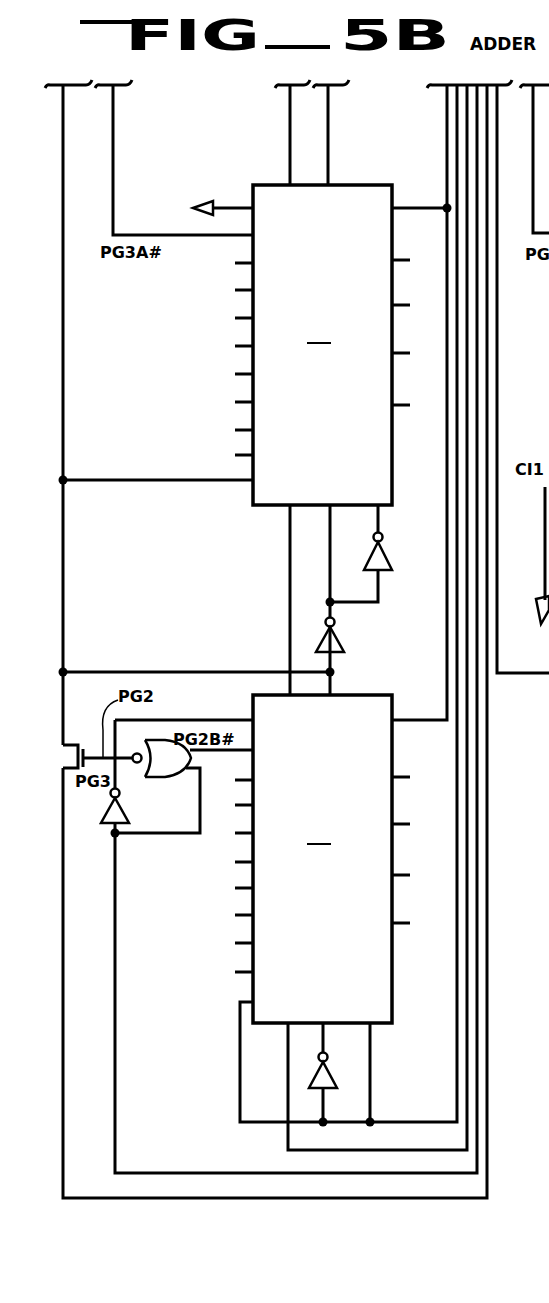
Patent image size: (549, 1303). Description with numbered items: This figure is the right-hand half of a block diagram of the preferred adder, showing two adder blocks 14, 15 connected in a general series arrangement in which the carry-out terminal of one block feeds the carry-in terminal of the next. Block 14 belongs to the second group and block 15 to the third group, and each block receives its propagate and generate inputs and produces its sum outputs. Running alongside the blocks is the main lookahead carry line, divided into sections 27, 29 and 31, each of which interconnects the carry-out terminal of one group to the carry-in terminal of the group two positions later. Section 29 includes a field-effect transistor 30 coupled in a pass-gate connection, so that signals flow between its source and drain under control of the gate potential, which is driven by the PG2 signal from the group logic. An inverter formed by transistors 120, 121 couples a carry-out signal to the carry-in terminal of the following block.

The block 14 is at (292, 920).
The block 15 is at (319, 390).
The section of main lookahead carry line 27 is at (497, 176).
The section of main lookahead carry line 29 is at (63, 948).
The transistor 30 is at (58, 762).
The section of main lookahead carry line 31 is at (63, 176).
The transistor 120 is at (545, 541).
The transistor 121 is at (545, 572).